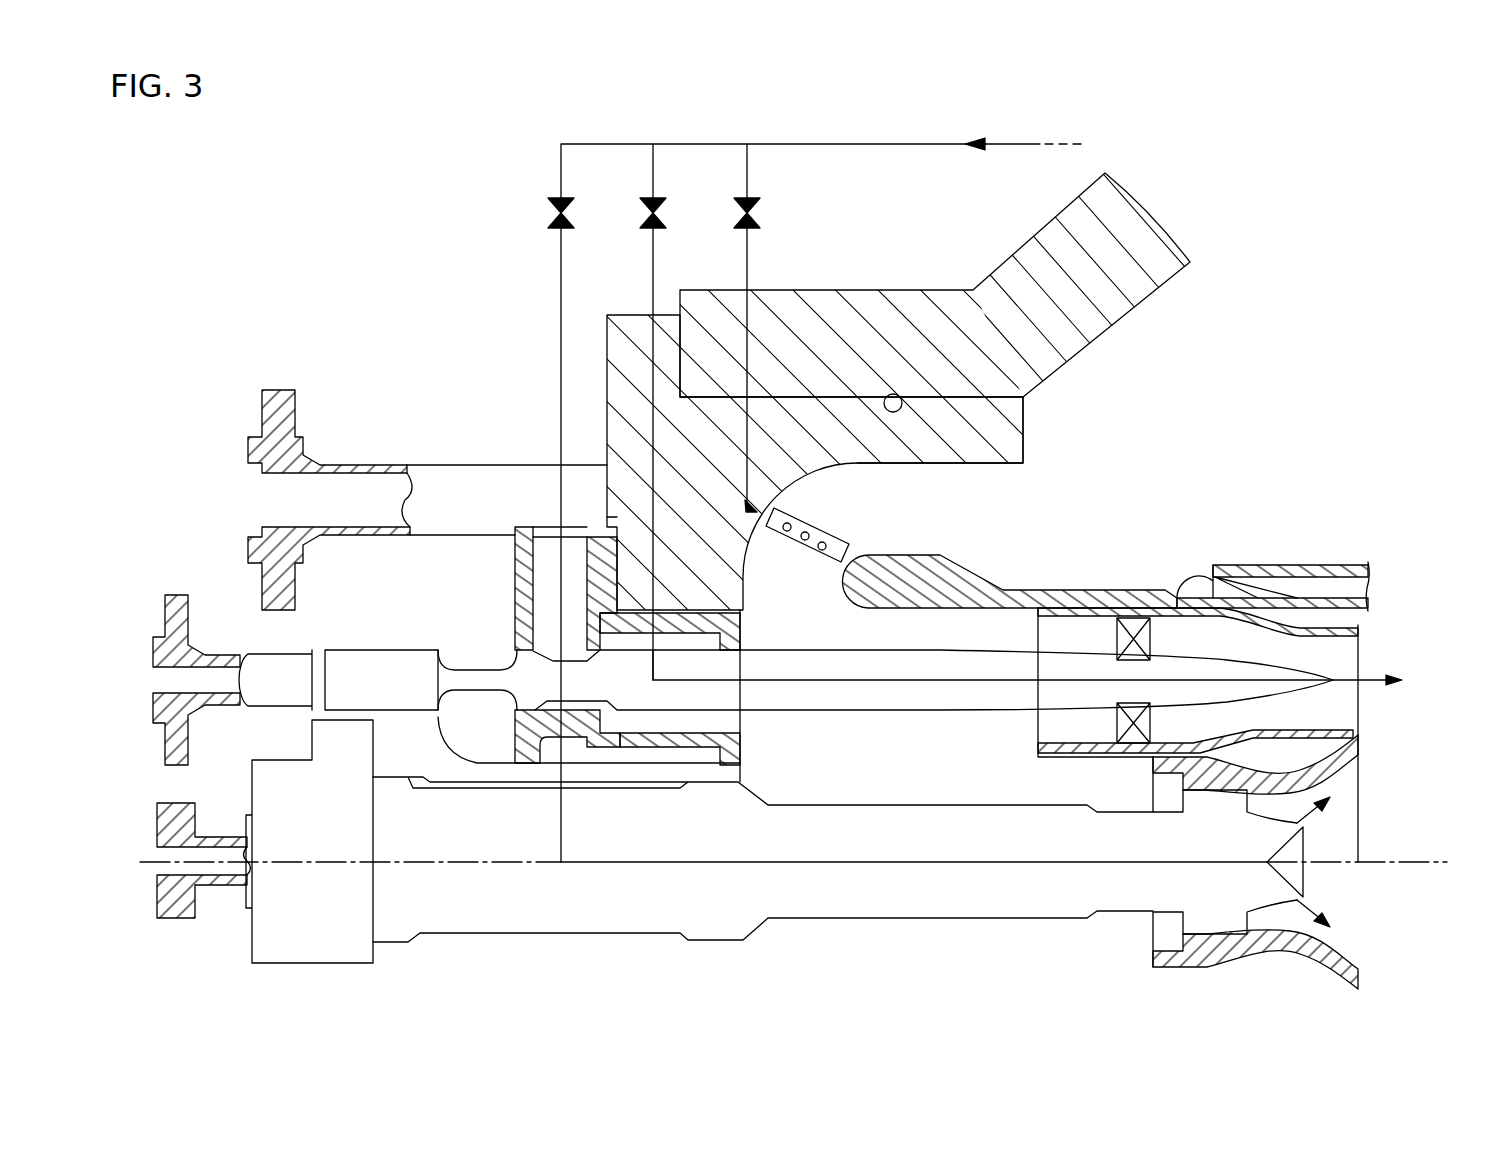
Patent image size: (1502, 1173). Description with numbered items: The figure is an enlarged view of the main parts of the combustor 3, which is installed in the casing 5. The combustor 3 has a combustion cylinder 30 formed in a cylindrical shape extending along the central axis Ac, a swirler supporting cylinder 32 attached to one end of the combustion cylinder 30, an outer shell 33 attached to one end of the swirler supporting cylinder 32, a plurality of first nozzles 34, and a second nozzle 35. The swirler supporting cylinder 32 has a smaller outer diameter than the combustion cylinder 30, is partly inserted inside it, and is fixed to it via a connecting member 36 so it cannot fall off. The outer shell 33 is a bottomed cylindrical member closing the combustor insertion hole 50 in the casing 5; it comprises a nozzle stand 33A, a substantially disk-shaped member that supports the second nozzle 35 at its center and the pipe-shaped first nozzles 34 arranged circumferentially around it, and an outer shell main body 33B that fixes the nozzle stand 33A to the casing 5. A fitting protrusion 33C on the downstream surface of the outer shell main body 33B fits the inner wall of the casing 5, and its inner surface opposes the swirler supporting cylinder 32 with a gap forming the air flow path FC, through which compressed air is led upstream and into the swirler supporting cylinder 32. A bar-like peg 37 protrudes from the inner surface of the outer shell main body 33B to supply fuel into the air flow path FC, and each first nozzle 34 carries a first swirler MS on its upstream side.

The combustor 3 is at (503, 207).
The casing 5 is at (1010, 275).
The combustion cylinder 30 is at (1302, 565).
The swirler supporting cylinder 32 is at (1082, 592).
The outer shell 33 is at (720, 530).
The nozzle stand 33A is at (520, 566).
The outer shell main body 33B is at (622, 355).
The fitting protrusion 33C is at (1020, 440).
The first nozzles 34 is at (888, 703).
The second nozzle 35 is at (815, 905).
The connecting member 36 is at (1195, 573).
The peg 37 is at (800, 550).
The combustor insertion hole 50 is at (878, 397).
The air flow path FC is at (949, 521).
The first swirler MS is at (1133, 742).
The central axis Ac is at (1382, 860).